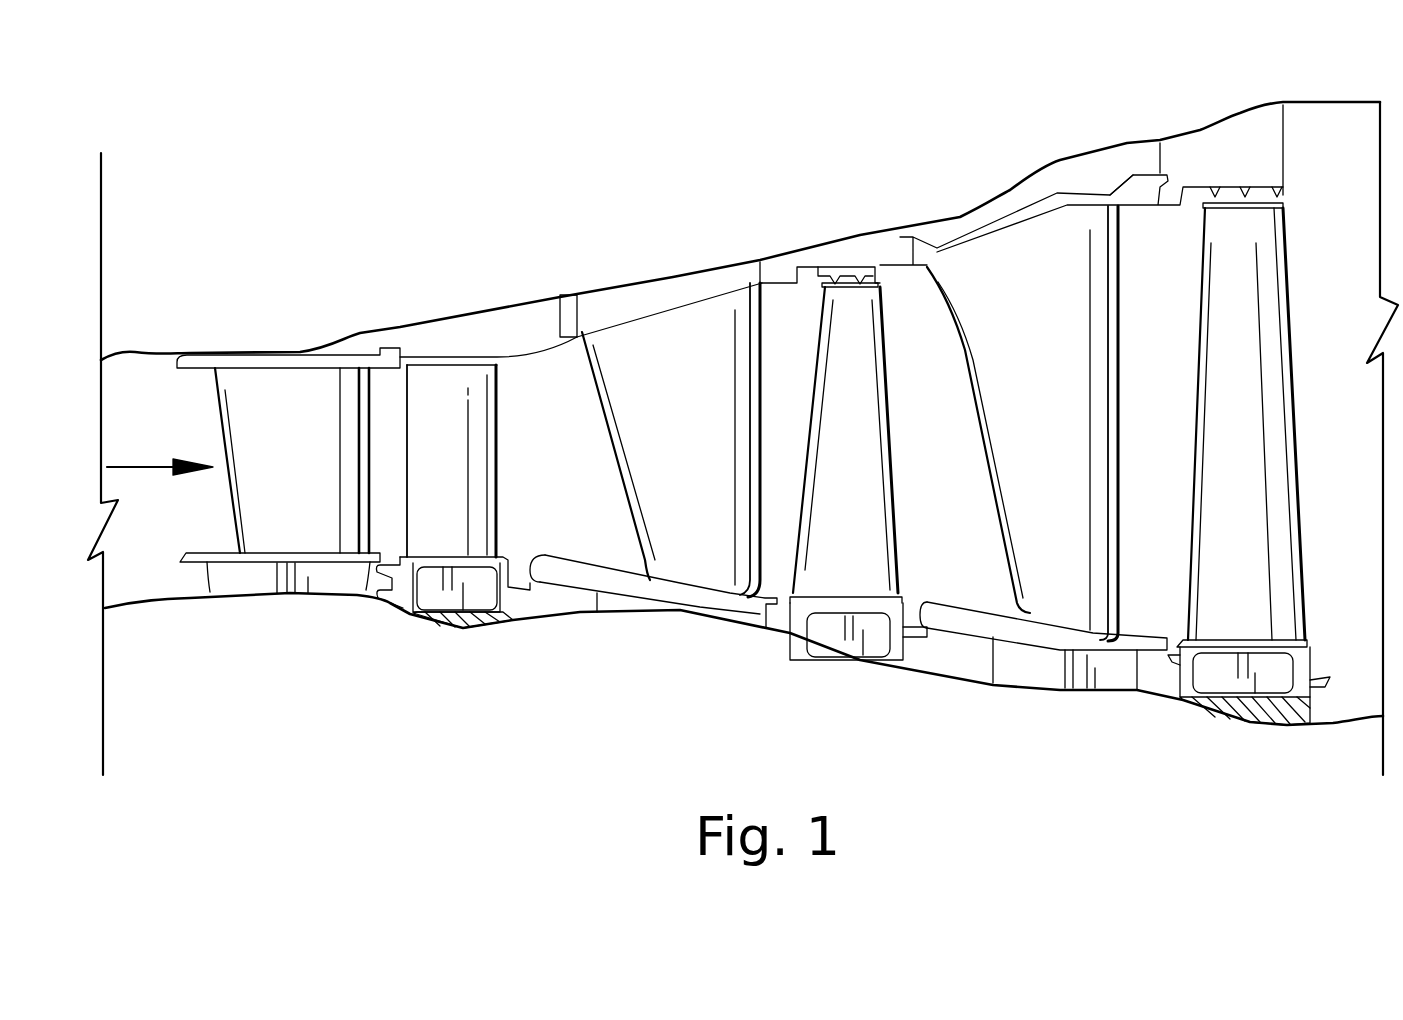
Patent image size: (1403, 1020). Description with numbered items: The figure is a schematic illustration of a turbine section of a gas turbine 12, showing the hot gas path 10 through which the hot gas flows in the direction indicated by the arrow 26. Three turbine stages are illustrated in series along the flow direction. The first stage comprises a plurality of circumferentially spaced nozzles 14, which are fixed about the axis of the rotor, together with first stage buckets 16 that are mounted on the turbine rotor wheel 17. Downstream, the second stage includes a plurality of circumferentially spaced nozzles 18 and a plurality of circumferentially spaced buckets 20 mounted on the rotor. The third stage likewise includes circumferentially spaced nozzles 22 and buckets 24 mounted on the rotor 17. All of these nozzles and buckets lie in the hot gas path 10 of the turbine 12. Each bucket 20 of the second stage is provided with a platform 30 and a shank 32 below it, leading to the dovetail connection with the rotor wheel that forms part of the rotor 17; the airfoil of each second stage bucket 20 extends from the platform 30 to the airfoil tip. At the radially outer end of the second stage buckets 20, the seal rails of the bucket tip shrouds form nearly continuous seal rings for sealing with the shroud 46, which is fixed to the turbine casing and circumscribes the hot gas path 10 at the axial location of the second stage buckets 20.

The hot gas path 10 is at (563, 365).
The gas turbine 12 is at (677, 288).
The first stage nozzles 14 is at (310, 467).
The first stage buckets 16 is at (458, 512).
The turbine rotor wheel 17 is at (475, 630).
The second stage nozzles 18 is at (695, 443).
The second stage buckets 20 is at (857, 457).
The third stage nozzles 22 is at (1062, 438).
The third stage buckets 24 is at (1255, 475).
The arrow 26 is at (152, 467).
The platform 30 is at (850, 607).
The shank 32 is at (830, 627).
The shroud 46 is at (861, 245).